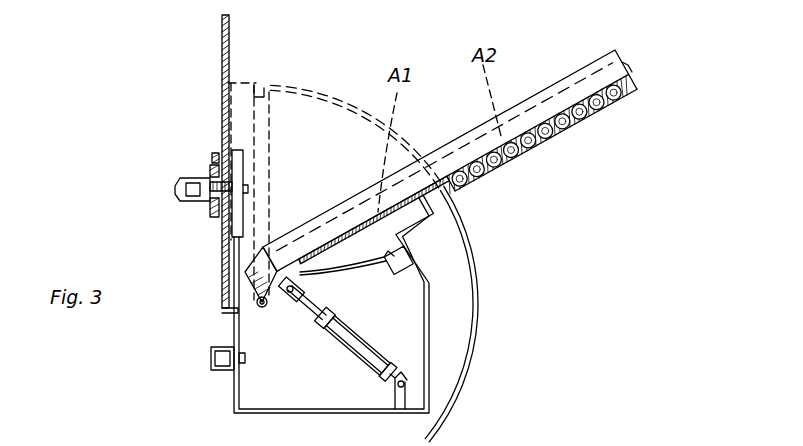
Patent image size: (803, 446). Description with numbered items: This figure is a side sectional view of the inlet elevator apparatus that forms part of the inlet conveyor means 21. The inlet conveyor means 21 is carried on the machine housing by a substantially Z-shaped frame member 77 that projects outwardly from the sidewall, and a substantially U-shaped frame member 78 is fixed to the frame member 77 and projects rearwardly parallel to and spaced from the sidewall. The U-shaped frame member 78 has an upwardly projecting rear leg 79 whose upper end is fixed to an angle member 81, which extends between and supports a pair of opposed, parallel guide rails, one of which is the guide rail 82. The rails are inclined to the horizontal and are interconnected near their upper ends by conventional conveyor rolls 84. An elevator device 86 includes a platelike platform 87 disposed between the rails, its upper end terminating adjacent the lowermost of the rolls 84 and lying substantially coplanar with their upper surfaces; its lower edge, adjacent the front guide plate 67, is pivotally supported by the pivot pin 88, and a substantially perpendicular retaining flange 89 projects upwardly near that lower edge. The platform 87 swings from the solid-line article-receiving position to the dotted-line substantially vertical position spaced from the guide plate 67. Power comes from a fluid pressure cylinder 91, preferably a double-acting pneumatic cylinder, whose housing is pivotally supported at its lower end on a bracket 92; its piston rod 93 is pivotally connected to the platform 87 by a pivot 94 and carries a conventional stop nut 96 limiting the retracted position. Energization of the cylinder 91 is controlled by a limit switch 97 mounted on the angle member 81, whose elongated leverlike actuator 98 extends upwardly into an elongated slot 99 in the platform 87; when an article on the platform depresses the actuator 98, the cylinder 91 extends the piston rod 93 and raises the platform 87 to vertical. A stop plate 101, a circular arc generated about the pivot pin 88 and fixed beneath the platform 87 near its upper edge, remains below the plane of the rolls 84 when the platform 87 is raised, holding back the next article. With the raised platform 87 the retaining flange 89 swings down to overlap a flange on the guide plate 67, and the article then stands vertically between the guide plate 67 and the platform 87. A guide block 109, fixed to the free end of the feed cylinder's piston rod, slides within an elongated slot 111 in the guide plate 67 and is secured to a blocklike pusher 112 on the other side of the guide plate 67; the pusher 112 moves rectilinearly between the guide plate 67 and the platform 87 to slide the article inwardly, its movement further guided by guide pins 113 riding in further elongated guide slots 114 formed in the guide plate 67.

The inlet conveyor means 21 is at (500, 193).
The front guide plate 67 is at (222, 29).
The Z-shaped frame member 77 is at (211, 362).
The U-shaped frame member 78 is at (308, 413).
The rear leg 79 is at (432, 300).
The angle member 81 is at (418, 225).
The guide rail 82 is at (600, 80).
The conveyor rolls 84 is at (612, 110).
The elevator device 86 is at (336, 359).
The platelike platform 87 is at (257, 114).
The pivot pin 88 is at (262, 308).
The retaining flange 89 is at (248, 288).
The fluid pressure cylinder 91 is at (365, 353).
The bracket 92 is at (400, 404).
The piston rod 93 is at (311, 308).
The pivot 94 is at (292, 302).
The stop nut 96 is at (318, 322).
The limit switch 97 is at (414, 263).
The leverlike actuator 98 is at (357, 265).
The elongated slot 99 is at (306, 242).
The stop plate 101 is at (473, 343).
The guide block 109 is at (220, 190).
The elongated slot 111 is at (200, 178).
The pusher 112 is at (240, 160).
The guide pins 113 is at (216, 220).
The guide slots 114 is at (212, 158).